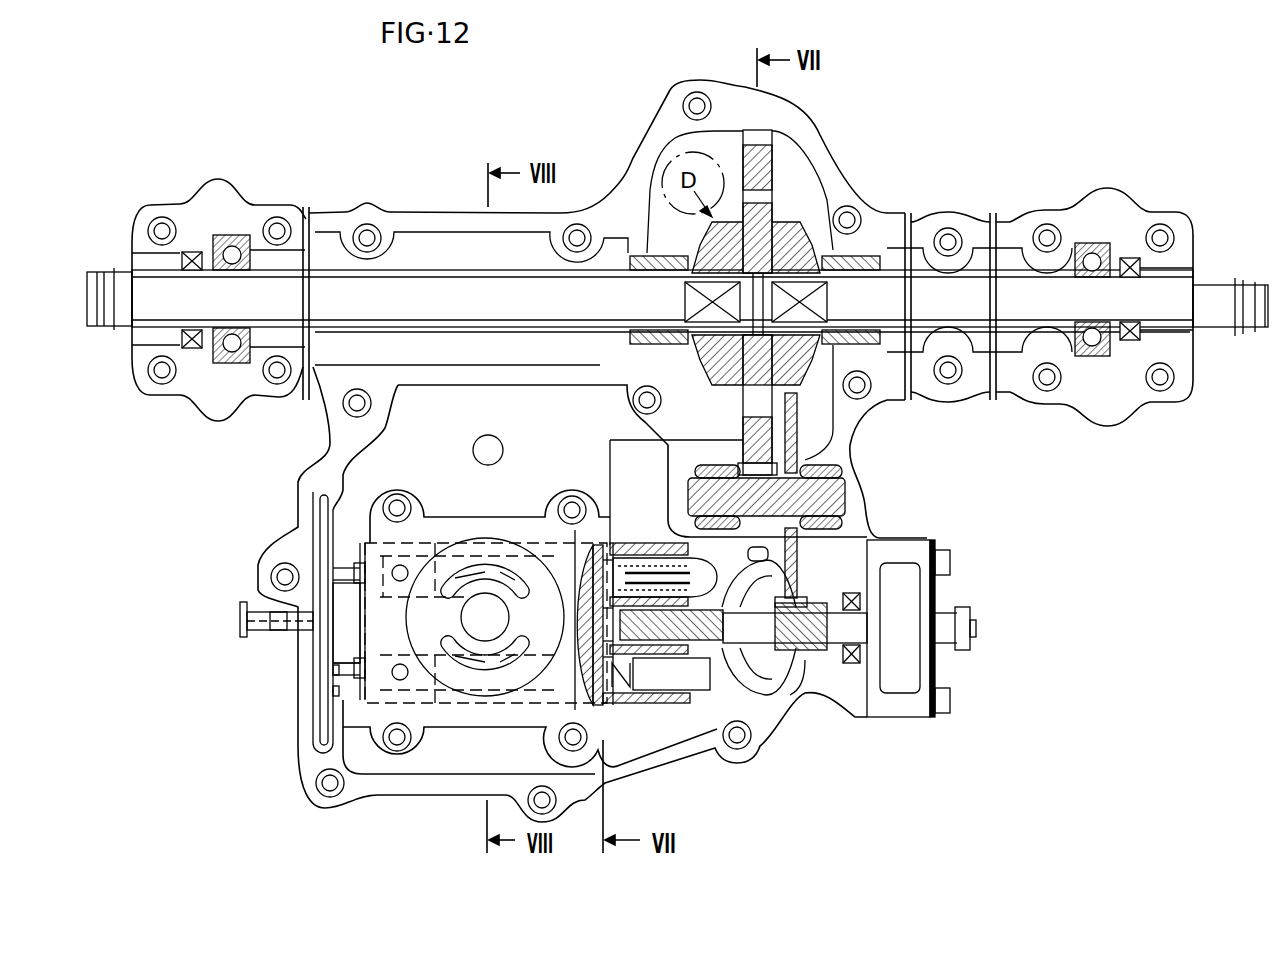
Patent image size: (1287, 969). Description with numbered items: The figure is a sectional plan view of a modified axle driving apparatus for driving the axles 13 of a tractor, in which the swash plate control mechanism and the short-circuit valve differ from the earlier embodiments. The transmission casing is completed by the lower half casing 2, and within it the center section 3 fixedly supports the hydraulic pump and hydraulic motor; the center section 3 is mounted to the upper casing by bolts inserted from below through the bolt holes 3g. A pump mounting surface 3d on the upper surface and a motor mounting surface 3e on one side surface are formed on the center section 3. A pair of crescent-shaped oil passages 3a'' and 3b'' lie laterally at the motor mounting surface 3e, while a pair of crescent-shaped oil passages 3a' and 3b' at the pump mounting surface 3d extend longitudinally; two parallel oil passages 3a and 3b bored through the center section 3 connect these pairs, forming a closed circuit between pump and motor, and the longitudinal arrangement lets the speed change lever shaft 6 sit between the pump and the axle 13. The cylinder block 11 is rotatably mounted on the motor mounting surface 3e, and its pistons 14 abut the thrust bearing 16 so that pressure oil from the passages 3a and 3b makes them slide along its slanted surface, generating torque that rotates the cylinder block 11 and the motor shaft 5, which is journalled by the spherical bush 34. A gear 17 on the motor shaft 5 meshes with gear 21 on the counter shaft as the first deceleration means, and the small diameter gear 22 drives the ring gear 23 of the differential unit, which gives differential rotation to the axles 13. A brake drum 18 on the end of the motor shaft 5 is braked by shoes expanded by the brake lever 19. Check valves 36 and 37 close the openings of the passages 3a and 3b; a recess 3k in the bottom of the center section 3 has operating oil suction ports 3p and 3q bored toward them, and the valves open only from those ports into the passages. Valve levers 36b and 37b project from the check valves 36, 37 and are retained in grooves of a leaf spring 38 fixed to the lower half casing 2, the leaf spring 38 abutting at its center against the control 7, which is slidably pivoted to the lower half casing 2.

The lower half casing 2 is at (638, 770).
The center section 3 is at (540, 515).
The oil passage 3a is at (485, 540).
The crescent-shaped oil passage 3a' is at (458, 500).
The crescent-shaped oil passage 3a'' is at (564, 496).
The oil passage 3b is at (488, 702).
The crescent-shaped oil passage 3b' is at (478, 709).
The crescent-shaped oil passage 3b'' is at (601, 733).
The pump mounting surface 3d is at (446, 644).
The motor mounting surface 3e is at (620, 556).
The bolt holes 3g is at (397, 505).
The recess 3k is at (346, 623).
The operating oil suction port 3p is at (406, 568).
The operating oil suction port 3q is at (405, 680).
The motor shaft 5 is at (743, 626).
The speed change lever shaft 6 is at (499, 442).
The control 7 is at (240, 616).
The cylinder block 11 is at (660, 703).
The axles 13 is at (521, 338).
The pistons 14 is at (671, 674).
The thrust bearing 16 is at (716, 752).
The gear 17 is at (812, 690).
The brake drum 18 is at (900, 700).
The brake lever 19 is at (955, 616).
The gear 21 is at (799, 436).
The small diameter gear 22 is at (710, 463).
The ring gear 23 is at (742, 432).
The spherical bush 34 is at (828, 600).
The check valve 36 is at (347, 525).
The valve lever 36b is at (301, 550).
The check valve 37 is at (349, 637).
The valve lever 37b is at (333, 672).
The leaf spring 38 is at (333, 690).